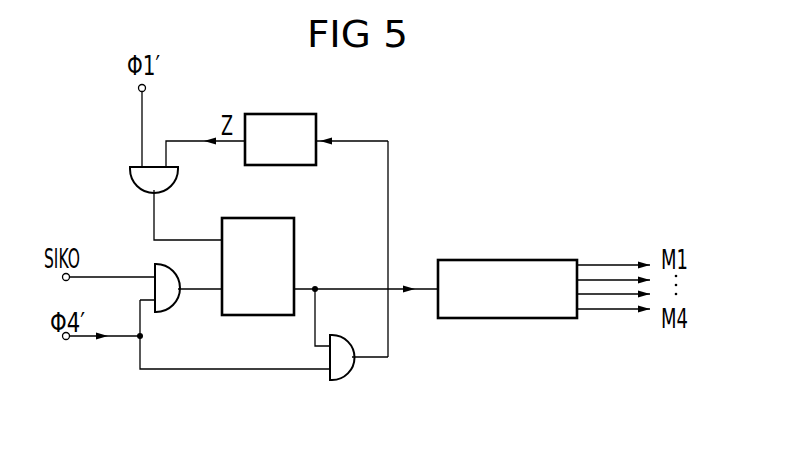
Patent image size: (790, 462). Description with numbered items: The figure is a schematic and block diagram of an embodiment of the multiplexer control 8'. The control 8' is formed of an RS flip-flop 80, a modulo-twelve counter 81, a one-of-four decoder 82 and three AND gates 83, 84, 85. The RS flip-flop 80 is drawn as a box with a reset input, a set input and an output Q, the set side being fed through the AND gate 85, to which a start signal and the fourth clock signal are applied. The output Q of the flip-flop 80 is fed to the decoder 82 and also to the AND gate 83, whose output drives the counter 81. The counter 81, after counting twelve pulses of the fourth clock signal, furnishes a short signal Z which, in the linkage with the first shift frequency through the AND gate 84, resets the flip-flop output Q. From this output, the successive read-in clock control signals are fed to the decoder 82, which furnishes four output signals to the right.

The RS flip-flop 80 is at (294, 244).
The modulo-12 counter 81 is at (270, 114).
The one-of-four decoder 82 is at (505, 260).
The AND gate 83 is at (341, 374).
The AND gate 84 is at (167, 182).
The AND gate 85 is at (164, 304).
The multiplexer control 8' is at (454, 137).